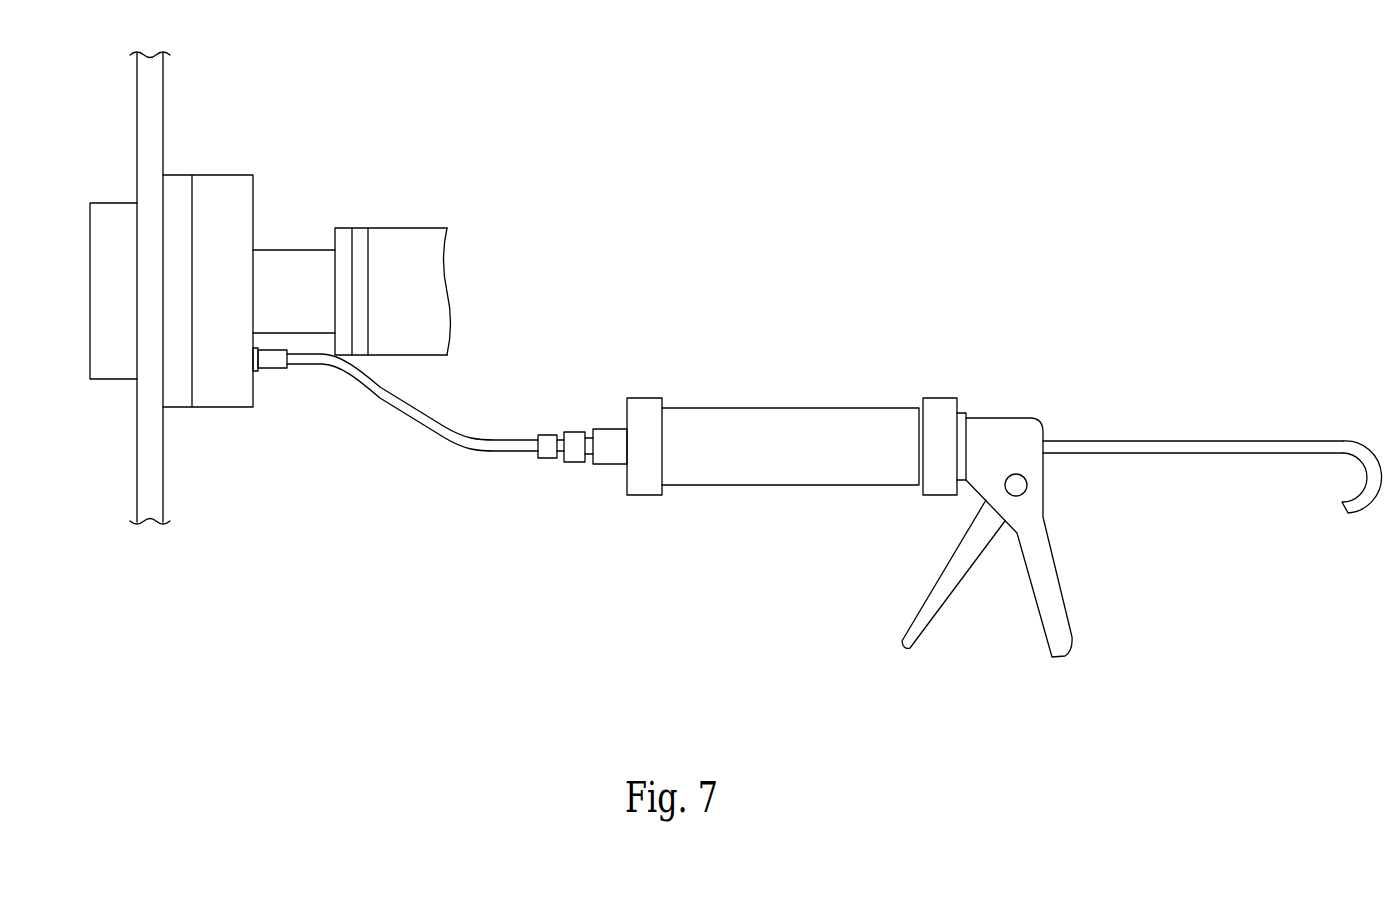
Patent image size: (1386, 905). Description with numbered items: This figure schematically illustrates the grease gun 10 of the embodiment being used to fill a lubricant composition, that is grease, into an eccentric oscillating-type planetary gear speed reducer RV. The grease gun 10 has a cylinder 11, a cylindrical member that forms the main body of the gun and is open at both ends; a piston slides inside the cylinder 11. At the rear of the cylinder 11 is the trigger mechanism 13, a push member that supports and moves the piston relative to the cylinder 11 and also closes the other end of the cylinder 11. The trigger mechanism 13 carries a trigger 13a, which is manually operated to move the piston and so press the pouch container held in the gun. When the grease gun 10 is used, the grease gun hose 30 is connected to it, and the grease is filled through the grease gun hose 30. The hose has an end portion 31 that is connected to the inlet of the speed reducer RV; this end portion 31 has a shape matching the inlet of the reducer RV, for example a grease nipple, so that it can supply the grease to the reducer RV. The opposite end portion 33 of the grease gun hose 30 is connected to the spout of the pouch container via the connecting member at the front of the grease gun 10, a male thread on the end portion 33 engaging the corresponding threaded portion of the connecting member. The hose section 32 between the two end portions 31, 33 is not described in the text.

The eccentric oscillating-type planetary gear speed reducer RV is at (325, 177).
The grease gun 10 is at (1004, 508).
The cylinder 11 is at (744, 486).
The trigger mechanism 13 is at (920, 629).
The trigger 13a is at (898, 643).
The grease gun hose 30 is at (440, 498).
The end portion 31 is at (274, 370).
The hose 32 is at (455, 441).
The end portion 33 is at (572, 462).